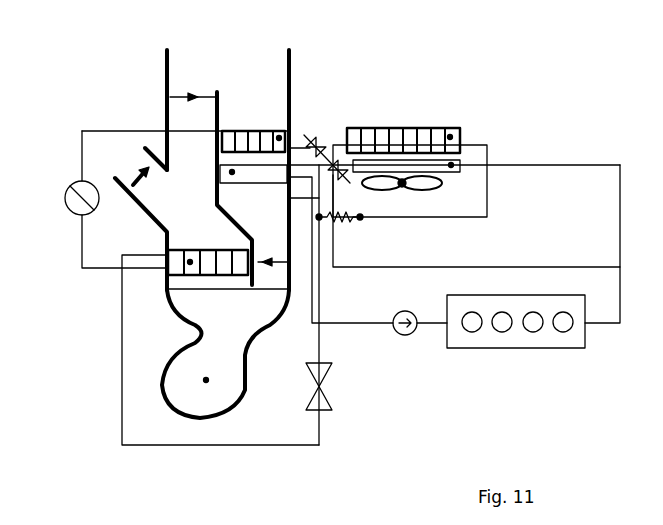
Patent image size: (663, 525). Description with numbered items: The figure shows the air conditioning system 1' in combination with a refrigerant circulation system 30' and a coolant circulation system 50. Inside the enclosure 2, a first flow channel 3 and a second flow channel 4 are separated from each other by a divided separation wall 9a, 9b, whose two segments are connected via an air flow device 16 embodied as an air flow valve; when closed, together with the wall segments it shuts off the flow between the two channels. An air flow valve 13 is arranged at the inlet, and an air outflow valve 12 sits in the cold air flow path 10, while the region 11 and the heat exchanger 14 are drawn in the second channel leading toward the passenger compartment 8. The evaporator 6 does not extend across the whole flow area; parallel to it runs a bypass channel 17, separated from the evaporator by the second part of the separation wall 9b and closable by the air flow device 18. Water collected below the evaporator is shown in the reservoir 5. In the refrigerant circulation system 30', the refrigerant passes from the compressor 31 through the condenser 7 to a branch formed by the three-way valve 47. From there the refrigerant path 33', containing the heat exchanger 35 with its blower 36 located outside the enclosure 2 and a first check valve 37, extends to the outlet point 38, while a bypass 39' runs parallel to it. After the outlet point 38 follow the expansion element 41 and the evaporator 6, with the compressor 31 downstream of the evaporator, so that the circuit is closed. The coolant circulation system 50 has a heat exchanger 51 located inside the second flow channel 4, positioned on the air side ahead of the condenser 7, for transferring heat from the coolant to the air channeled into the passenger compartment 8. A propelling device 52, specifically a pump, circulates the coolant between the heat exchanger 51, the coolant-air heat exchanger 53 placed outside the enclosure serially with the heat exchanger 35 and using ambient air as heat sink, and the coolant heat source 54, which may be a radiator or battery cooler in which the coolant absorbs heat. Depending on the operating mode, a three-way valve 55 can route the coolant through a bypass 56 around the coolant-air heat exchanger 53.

The air conditioning system 1' is at (581, 61).
The enclosure 2 is at (166, 62).
The first flow channel 3 is at (165, 122).
The second flow channel 4 is at (291, 71).
The water collection reservoir 5 is at (207, 381).
The evaporator 6 is at (177, 273).
The condenser 7 is at (292, 131).
The passenger compartment 8 is at (196, 71).
The first part of the separation wall 9a is at (212, 175).
The second part of the separation wall 9b is at (247, 281).
The cold air flow path 10 is at (140, 156).
The second air flow path 11 is at (185, 147).
The air outflow valve 12 is at (128, 175).
The air flow valve 13 is at (166, 96).
The first heat exchanger 14 is at (253, 121).
The air flow device 16 is at (220, 213).
The bypass channel 17 is at (273, 250).
The air flow device 18 is at (270, 268).
The refrigerant circulation system 30' is at (262, 371).
The compressor 31 is at (70, 205).
The refrigerant path 33' is at (429, 166).
The heat exchanger 35 is at (451, 132).
The blower 36 is at (404, 185).
The first check valve 37 is at (362, 219).
The outlet point 38 is at (321, 219).
The bypass 39' is at (439, 186).
The expansion element 41 is at (324, 388).
The three-way valve 47 is at (322, 145).
The coolant circulation system 50 is at (606, 209).
The heat exchanger 51 is at (233, 175).
The propelling device 52 is at (411, 333).
The coolant-air heat exchanger 53 is at (453, 167).
The coolant heat source 54 is at (516, 334).
The three-way valve 55 is at (342, 175).
The bypass 56 is at (390, 268).